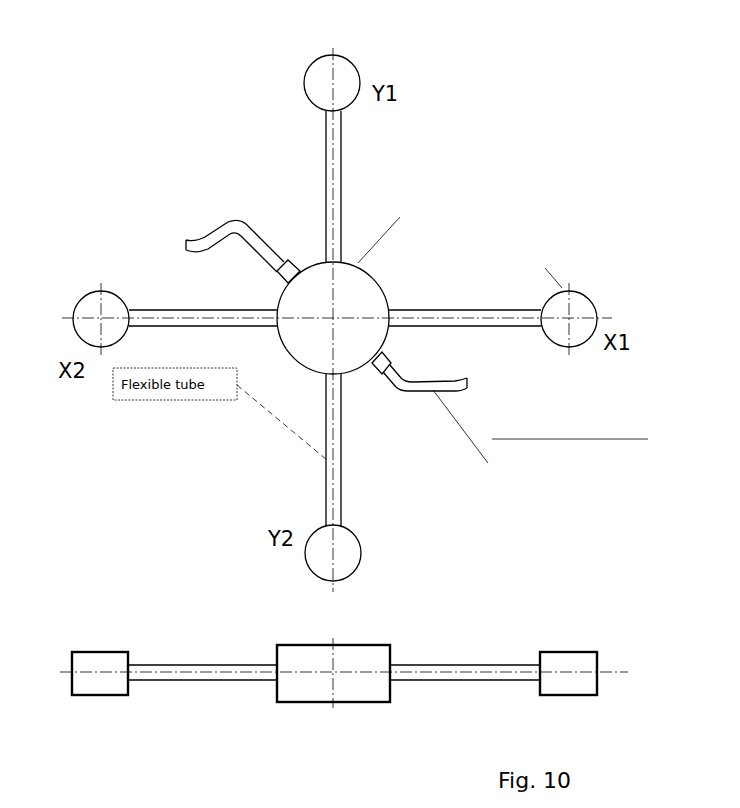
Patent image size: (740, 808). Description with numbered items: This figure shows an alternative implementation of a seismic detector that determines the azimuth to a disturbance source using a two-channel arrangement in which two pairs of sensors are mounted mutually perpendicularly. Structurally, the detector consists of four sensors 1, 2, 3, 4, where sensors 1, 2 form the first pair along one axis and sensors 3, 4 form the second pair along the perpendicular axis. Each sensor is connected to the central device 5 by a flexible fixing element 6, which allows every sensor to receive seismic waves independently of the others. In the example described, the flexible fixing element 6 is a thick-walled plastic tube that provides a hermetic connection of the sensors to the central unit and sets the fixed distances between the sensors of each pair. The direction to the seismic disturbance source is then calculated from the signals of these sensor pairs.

The sensor 1 is at (590, 300).
The sensor 2 is at (100, 290).
The sensor 3 is at (315, 80).
The sensor 4 is at (360, 553).
The central device 5 is at (367, 690).
The flexible fixing element 6 is at (288, 450).